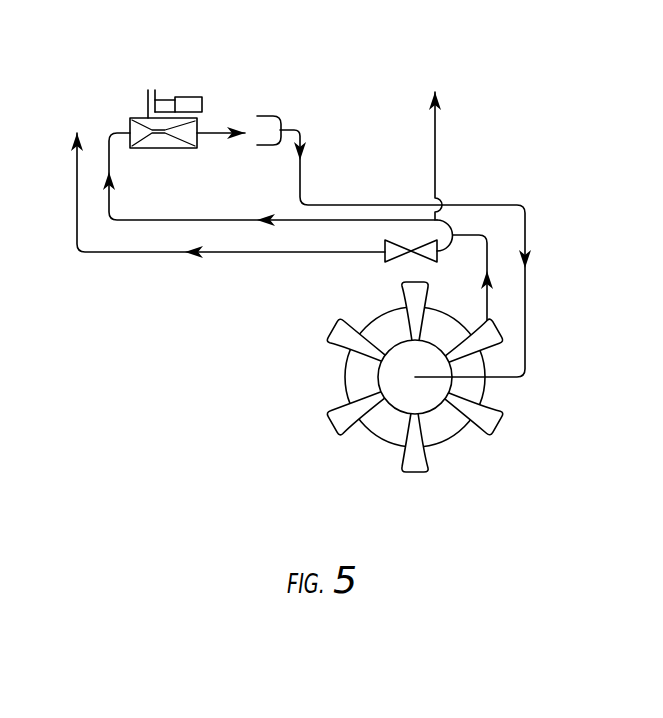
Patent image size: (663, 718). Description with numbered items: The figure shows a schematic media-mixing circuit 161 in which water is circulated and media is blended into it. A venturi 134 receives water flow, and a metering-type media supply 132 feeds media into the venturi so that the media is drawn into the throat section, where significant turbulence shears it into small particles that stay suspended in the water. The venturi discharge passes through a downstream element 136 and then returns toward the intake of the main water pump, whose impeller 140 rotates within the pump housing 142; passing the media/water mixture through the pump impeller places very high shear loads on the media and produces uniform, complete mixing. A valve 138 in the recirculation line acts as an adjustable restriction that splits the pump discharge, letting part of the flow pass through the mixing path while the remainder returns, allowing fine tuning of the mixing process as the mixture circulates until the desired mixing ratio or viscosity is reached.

The sensor 132 is at (208, 100).
The venturi 134 is at (133, 115).
The reservoir 136 is at (274, 117).
The valve 138 is at (380, 257).
The impeller 140 is at (323, 340).
The pump housing 142 is at (342, 393).
The fluid circuit 161 is at (130, 331).